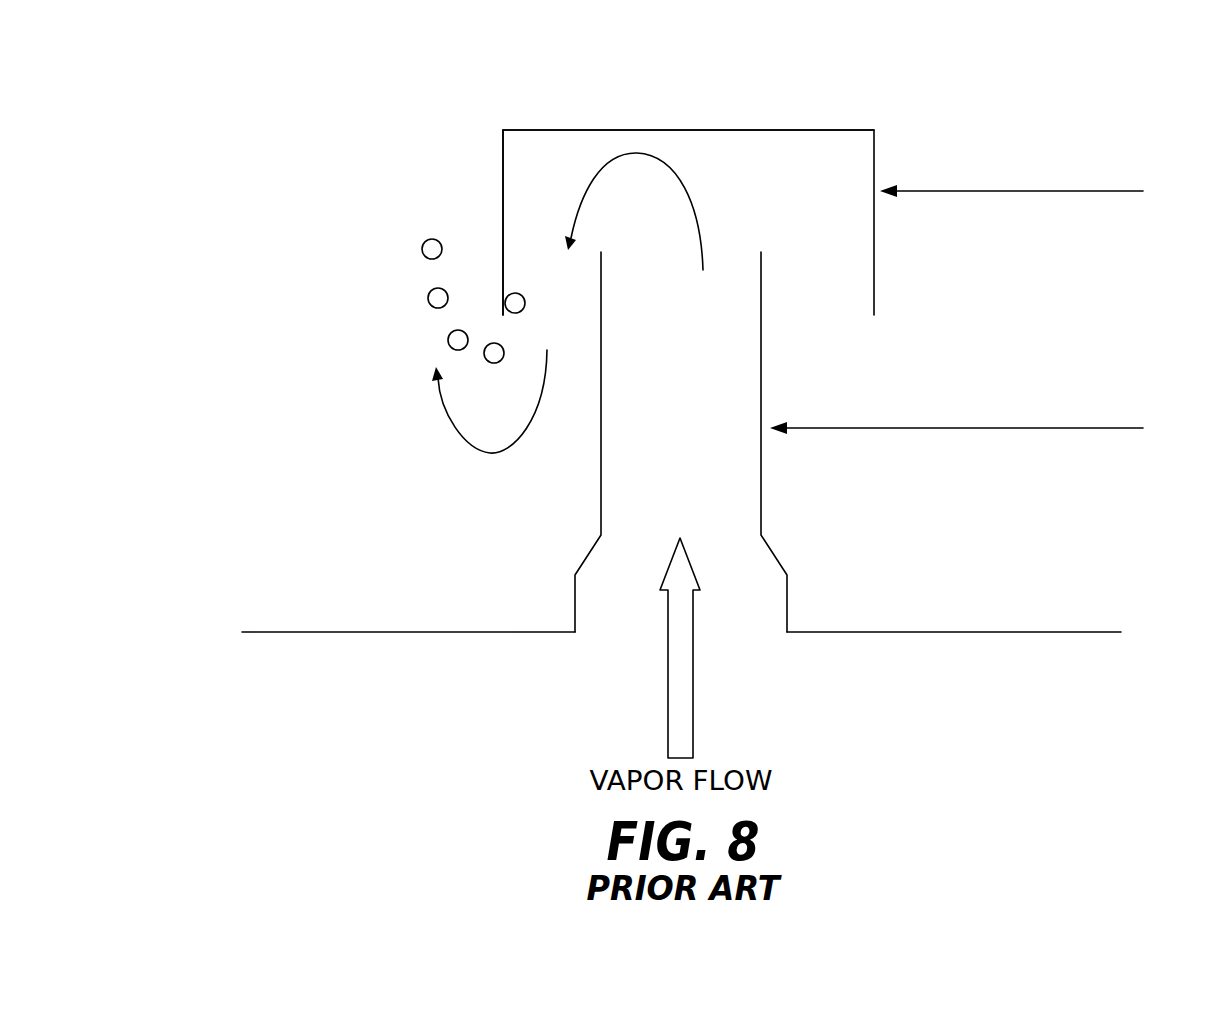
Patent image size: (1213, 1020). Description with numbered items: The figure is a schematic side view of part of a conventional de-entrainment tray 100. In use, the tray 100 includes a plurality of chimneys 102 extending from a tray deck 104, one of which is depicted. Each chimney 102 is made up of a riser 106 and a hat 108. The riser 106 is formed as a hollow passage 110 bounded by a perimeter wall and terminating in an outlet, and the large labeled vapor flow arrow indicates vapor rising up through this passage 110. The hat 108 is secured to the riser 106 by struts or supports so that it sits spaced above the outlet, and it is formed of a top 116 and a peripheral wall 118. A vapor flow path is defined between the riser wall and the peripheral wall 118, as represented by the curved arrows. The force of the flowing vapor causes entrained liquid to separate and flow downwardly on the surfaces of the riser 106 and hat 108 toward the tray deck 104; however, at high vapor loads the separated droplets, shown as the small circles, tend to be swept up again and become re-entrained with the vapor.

The de-entrainment tray 100 is at (325, 166).
The chimney 102 is at (885, 113).
The tray deck 104 is at (1064, 622).
The riser 106 is at (1055, 428).
The hat 108 is at (1054, 191).
The hollow passage 110 is at (705, 453).
The top 116 is at (724, 129).
The peripheral wall 118 is at (503, 160).